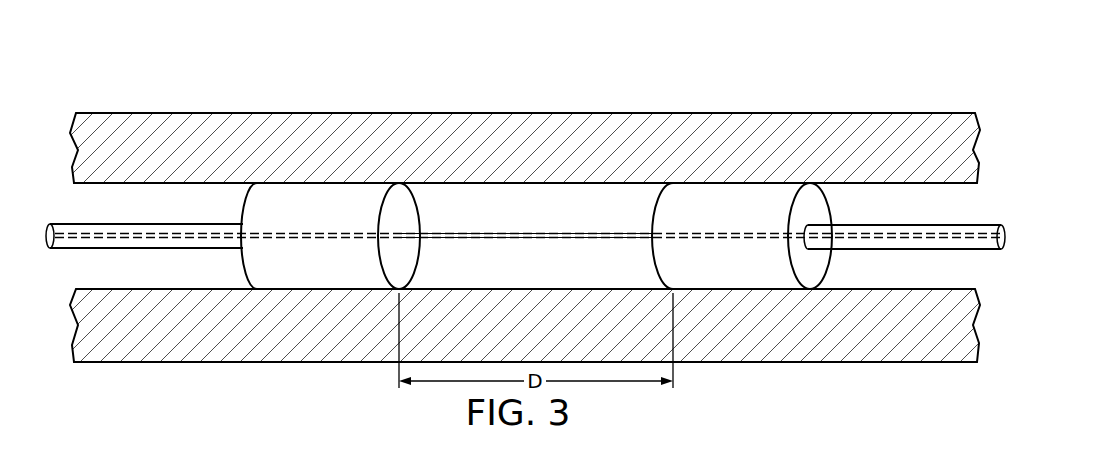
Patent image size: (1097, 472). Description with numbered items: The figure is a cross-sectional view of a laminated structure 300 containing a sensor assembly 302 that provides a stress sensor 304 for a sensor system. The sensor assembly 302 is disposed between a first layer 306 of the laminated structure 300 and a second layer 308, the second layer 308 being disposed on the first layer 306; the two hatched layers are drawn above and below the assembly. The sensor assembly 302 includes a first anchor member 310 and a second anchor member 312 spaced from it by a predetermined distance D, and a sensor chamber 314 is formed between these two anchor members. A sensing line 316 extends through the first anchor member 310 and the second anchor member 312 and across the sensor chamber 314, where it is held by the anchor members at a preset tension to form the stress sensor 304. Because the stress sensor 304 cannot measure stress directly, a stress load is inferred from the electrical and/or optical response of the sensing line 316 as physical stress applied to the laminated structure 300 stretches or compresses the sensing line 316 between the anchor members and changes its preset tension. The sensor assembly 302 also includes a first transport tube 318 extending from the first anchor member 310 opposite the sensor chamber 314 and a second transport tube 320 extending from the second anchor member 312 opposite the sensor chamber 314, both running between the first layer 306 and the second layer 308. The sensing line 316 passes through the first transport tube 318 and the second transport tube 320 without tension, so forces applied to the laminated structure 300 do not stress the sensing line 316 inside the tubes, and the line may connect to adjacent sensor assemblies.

The laminated structure 300 is at (994, 196).
The sensor assembly 302 is at (499, 109).
The stress sensor 304 is at (591, 178).
The first layer 306 is at (977, 325).
The second layer 308 is at (977, 150).
The first anchor member 310 is at (241, 212).
The second anchor member 312 is at (655, 213).
The sensor chamber 314 is at (556, 215).
The sensing line 316 is at (70, 248).
The first transport tube 318 is at (130, 223).
The second transport tube 320 is at (918, 215).